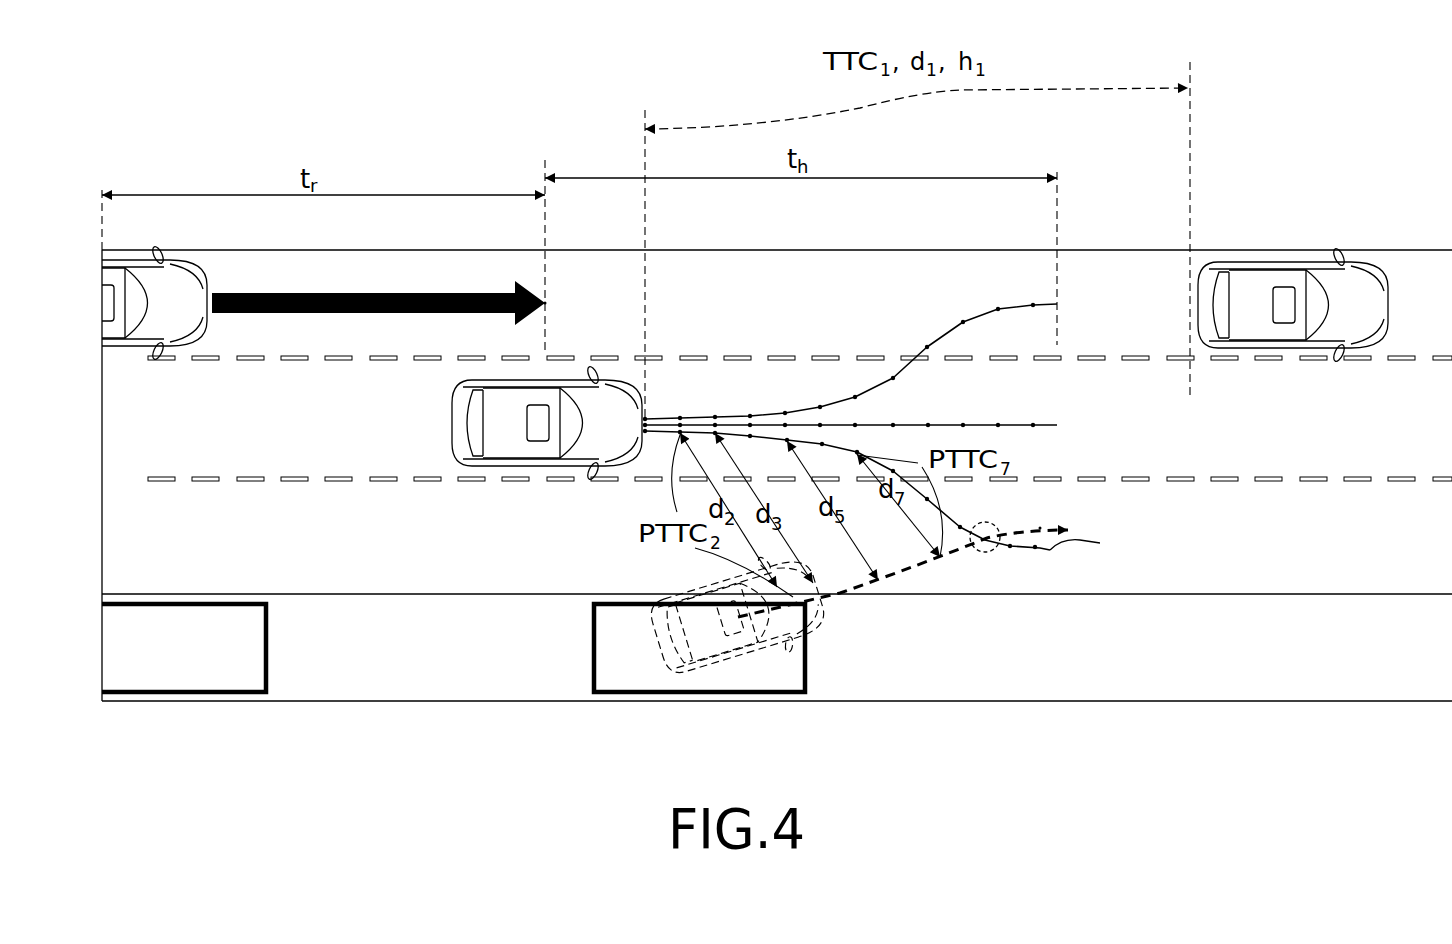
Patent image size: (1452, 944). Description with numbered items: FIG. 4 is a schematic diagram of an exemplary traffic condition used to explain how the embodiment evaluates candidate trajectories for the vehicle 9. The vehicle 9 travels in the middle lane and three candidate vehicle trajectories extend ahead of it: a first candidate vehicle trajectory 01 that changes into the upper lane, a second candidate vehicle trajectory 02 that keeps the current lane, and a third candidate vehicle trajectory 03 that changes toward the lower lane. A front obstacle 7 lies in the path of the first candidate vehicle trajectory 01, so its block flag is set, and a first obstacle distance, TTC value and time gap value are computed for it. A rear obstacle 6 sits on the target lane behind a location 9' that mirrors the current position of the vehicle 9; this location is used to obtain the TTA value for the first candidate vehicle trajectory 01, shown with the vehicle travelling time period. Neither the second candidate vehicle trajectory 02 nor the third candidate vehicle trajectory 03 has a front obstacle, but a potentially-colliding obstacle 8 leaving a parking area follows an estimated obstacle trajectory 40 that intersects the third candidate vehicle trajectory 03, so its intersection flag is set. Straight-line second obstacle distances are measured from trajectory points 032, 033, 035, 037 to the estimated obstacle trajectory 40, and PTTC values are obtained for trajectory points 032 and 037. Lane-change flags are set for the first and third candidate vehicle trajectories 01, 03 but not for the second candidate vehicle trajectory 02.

The rear obstacle 6 is at (180, 262).
The front obstacle 7 is at (1277, 265).
The vehicle 9 is at (516, 423).
The location on the target lane 9' is at (570, 296).
The potentially-colliding obstacle 8 is at (698, 660).
The first candidate vehicle trajectory 01 is at (1055, 306).
The second candidate vehicle trajectory 02 is at (1046, 423).
The third candidate vehicle trajectory 03 is at (1046, 549).
The trajectory point 032 is at (680, 433).
The trajectory point 033 is at (715, 433).
The trajectory point 035 is at (787, 440).
The trajectory point 037 is at (857, 454).
The estimated obstacle trajectory 40 is at (1040, 528).